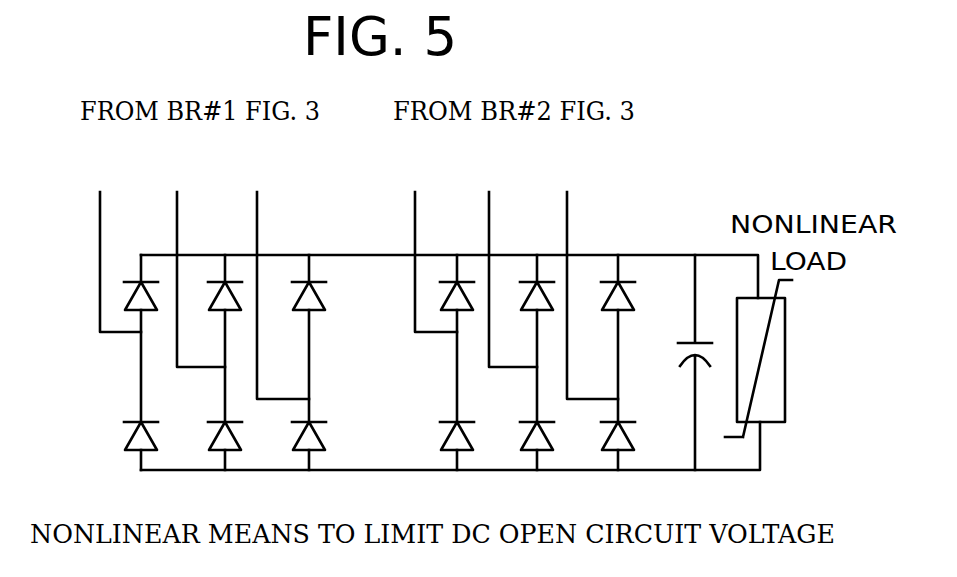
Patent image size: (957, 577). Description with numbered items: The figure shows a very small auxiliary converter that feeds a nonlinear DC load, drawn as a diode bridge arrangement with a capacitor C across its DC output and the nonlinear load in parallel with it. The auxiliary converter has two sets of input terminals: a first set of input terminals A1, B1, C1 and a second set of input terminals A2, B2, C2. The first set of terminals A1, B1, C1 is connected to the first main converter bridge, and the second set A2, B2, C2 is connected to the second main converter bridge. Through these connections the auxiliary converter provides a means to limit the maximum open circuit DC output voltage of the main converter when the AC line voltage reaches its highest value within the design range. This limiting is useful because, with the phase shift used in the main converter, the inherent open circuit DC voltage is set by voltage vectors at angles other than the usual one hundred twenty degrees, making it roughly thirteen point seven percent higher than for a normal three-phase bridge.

The input terminal A1 is at (115, 243).
The input terminal B1 is at (195, 260).
The input terminal C1 is at (274, 276).
The input terminal A2 is at (428, 243).
The input terminal B2 is at (507, 260).
The input terminal C2 is at (585, 276).
The capacitor C is at (681, 362).